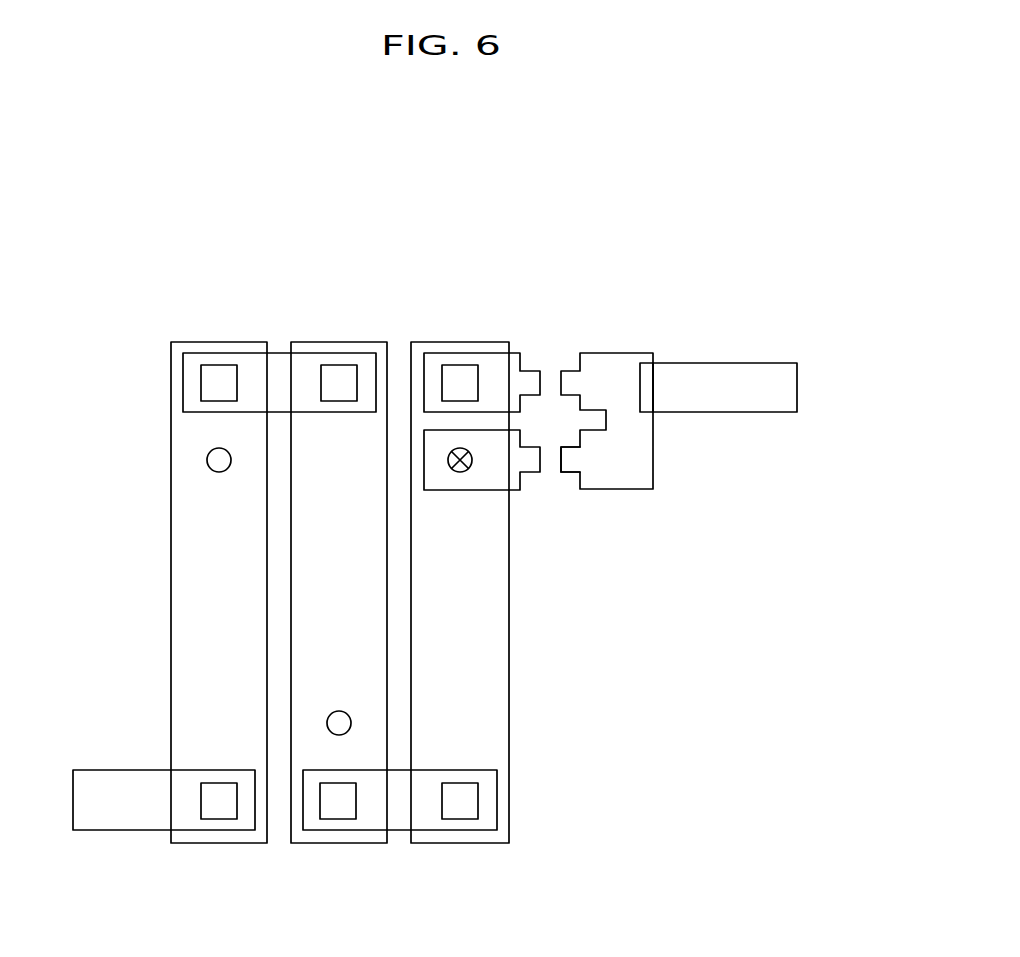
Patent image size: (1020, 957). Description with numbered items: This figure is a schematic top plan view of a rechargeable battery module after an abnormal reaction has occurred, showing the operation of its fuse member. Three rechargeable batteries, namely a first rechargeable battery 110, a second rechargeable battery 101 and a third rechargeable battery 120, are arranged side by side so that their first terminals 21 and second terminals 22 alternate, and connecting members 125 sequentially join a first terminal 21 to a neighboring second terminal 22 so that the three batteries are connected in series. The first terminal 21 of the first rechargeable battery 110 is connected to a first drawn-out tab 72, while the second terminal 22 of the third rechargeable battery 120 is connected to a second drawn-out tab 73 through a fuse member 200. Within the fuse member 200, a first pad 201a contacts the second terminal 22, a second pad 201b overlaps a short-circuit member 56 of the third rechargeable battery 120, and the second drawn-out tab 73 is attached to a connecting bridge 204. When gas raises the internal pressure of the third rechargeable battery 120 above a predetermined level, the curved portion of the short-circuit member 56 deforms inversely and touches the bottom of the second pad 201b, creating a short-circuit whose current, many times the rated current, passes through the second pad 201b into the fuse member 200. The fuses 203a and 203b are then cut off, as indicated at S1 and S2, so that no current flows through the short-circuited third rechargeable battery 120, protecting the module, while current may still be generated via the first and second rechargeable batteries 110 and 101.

The first rechargeable battery 110 is at (199, 305).
The second rechargeable battery 101 is at (329, 302).
The third rechargeable battery 120 is at (441, 304).
The connecting member 125 is at (277, 353).
The second terminal 22 is at (220, 365).
The first terminal 21 is at (340, 365).
The first drawn-out tab 72 is at (114, 830).
The second drawn-out tab 73 is at (758, 363).
The fuse member 200 is at (507, 231).
The first pad 201a is at (493, 353).
The second pad 201b is at (483, 430).
The fuse 203a is at (563, 371).
The fuse 203b is at (572, 447).
The connecting bridge 204 is at (653, 455).
The short-circuit member 56 is at (460, 470).
The cut-off of fuse S1 is at (551, 474).
The cut-off of fuse S2 is at (551, 366).